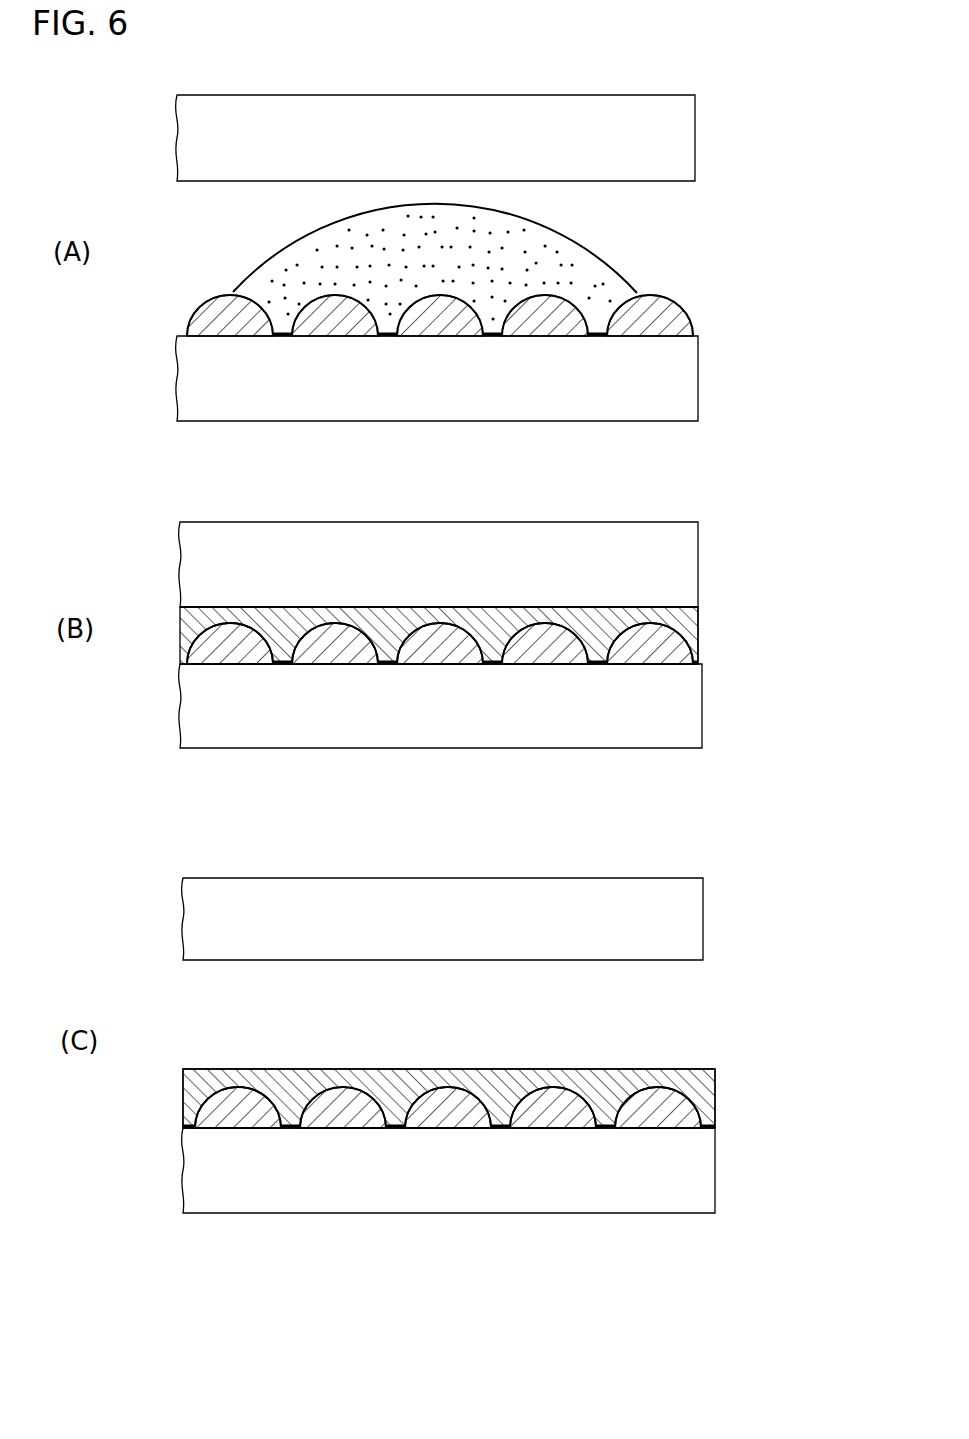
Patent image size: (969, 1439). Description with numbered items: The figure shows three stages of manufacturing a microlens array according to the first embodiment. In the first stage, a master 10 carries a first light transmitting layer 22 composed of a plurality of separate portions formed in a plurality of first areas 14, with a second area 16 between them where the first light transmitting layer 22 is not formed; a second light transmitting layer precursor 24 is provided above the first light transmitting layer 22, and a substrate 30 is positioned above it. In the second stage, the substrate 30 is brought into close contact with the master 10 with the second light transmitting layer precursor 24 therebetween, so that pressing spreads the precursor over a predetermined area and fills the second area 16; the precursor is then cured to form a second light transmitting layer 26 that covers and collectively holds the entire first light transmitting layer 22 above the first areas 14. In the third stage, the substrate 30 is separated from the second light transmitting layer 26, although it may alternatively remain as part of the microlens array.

The master 10 is at (683, 380).
The first areas 14 is at (650, 327).
The second area 16 is at (600, 322).
The first light transmitting layer 22 is at (673, 297).
The second light transmitting layer precursor 24 is at (590, 250).
The second light transmitting layer 26 is at (702, 618).
The substrate 30 is at (688, 135).